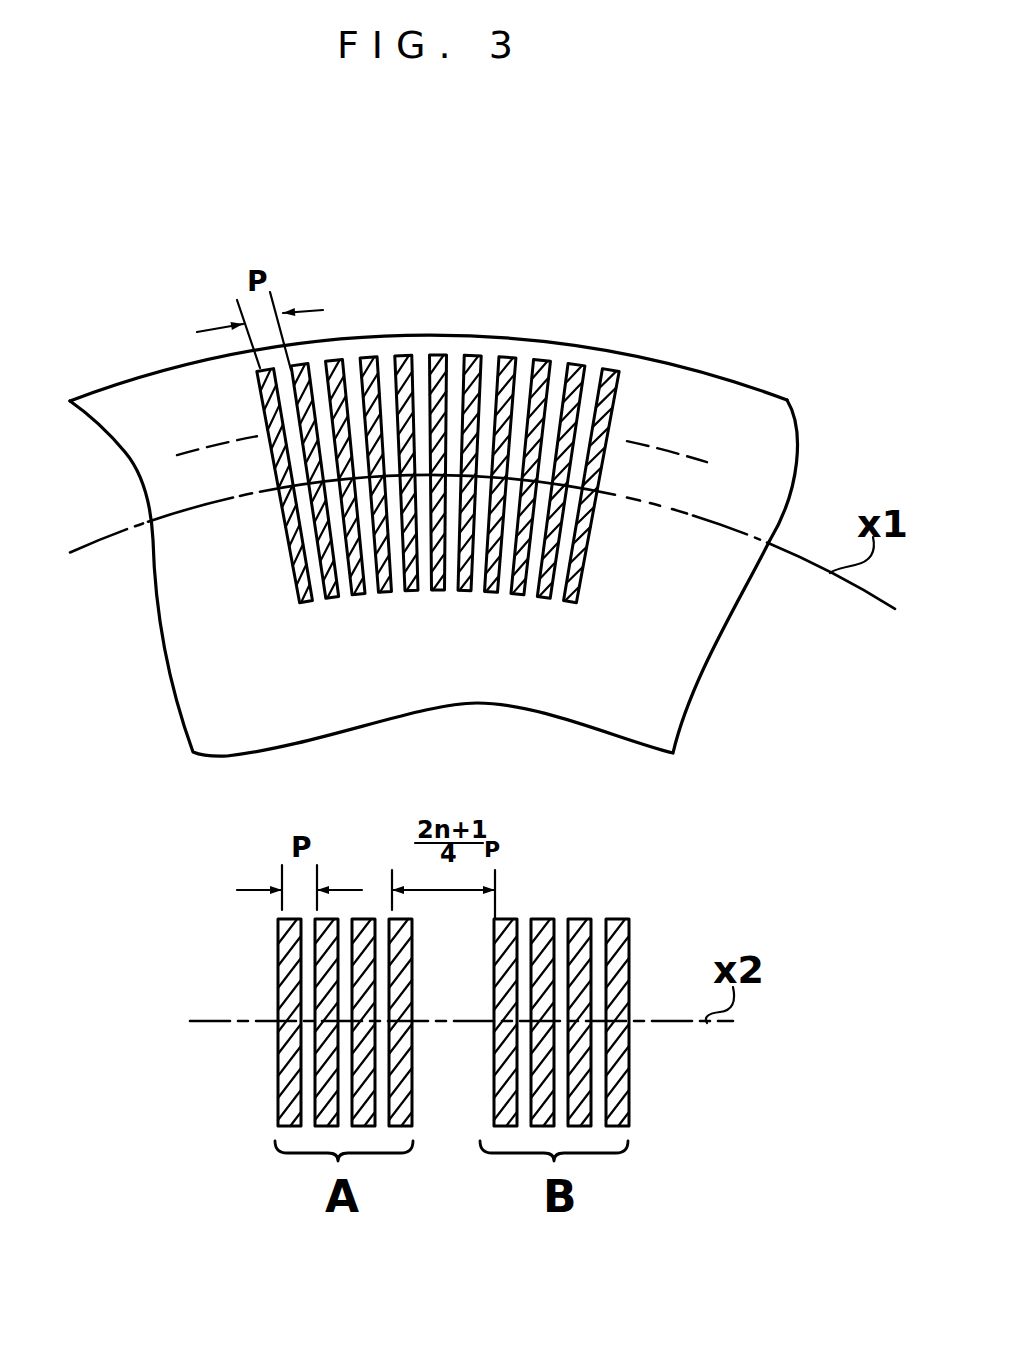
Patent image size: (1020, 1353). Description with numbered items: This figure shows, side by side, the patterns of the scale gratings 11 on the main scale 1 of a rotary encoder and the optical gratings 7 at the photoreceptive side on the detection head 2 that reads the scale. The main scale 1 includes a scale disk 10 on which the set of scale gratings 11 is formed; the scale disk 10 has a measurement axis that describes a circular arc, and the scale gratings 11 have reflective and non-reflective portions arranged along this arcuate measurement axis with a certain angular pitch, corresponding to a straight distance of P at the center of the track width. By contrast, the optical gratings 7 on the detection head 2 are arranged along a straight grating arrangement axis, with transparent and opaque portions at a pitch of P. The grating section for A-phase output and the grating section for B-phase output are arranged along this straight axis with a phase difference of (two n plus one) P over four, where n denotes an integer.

The main scale 1 is at (147, 402).
The scale disk 10 is at (703, 387).
The optical gratings (scale gratings) 11 is at (538, 378).
The detection head 2 is at (373, 979).
The optical gratings at the photoreceptive side 7 is at (580, 917).